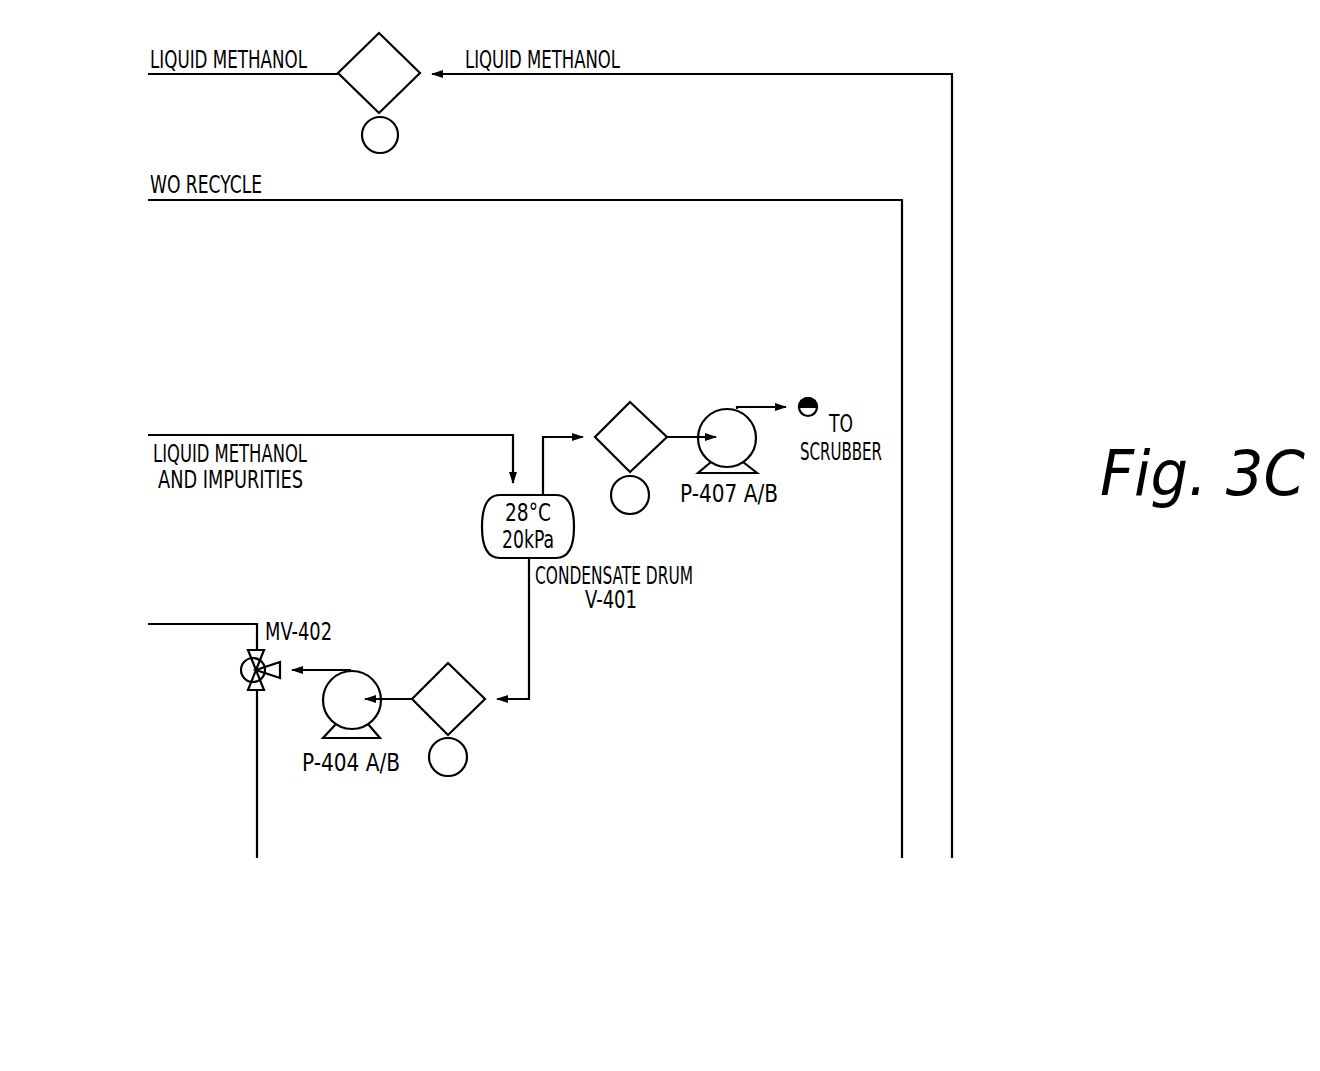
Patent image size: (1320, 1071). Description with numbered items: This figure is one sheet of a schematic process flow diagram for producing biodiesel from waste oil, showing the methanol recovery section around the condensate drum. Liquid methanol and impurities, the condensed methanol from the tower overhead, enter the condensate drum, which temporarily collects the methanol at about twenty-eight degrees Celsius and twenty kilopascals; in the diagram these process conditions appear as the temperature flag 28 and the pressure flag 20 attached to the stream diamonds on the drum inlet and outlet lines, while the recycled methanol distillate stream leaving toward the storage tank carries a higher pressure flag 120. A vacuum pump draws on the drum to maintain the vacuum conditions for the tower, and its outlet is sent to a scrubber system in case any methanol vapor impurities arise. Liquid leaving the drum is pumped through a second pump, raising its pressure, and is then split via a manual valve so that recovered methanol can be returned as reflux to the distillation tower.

The liquid methanol stream 120 is at (379, 57).
The liquid methanol and impurities stream 20 is at (539, 552).
The stream temperature indicator 28 is at (505, 446).